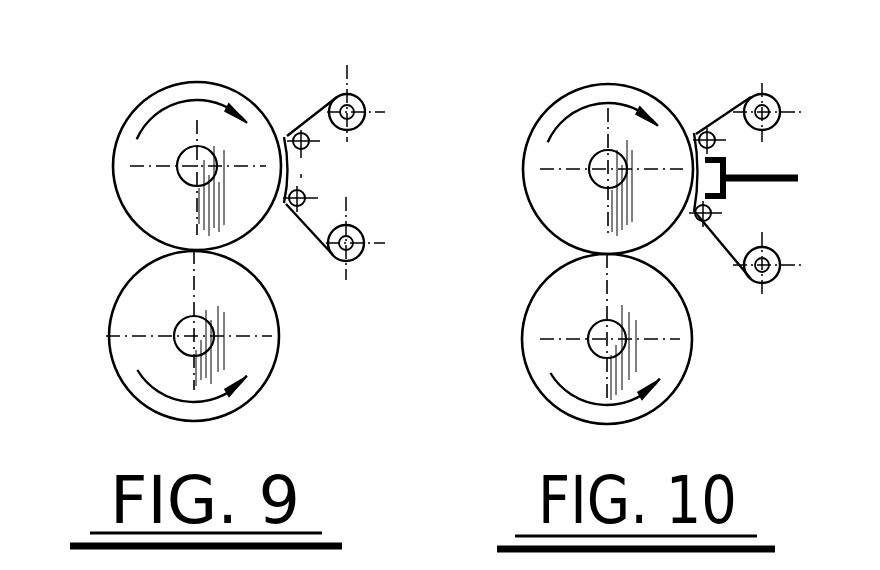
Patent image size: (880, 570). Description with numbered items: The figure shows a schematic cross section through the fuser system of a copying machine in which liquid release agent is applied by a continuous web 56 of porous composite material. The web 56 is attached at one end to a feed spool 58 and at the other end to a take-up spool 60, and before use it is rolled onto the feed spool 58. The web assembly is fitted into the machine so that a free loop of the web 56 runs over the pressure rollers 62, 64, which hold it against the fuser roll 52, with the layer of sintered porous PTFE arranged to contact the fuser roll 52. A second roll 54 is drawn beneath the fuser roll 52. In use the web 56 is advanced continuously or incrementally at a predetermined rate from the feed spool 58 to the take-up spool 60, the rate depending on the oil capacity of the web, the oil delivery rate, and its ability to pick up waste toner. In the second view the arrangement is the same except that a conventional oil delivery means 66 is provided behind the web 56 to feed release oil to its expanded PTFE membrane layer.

In FIG. 9, the fuser roll 52 is at (172, 117).
In FIG. 10, the fuser roll 52 is at (570, 123).
In FIG. 9, the lower roller 54 is at (152, 323).
In FIG. 10, the lower roller 54 is at (563, 357).
In FIG. 9, the continuous web 56 is at (314, 110).
In FIG. 9, the feed spool 58 is at (364, 116).
In FIG. 9, the take-up spool 60 is at (360, 255).
In FIG. 9, the pressure roller 62 is at (310, 143).
In FIG. 9, the pressure roller 64 is at (306, 199).
In FIG. 10, the oil delivery means 66 is at (730, 168).